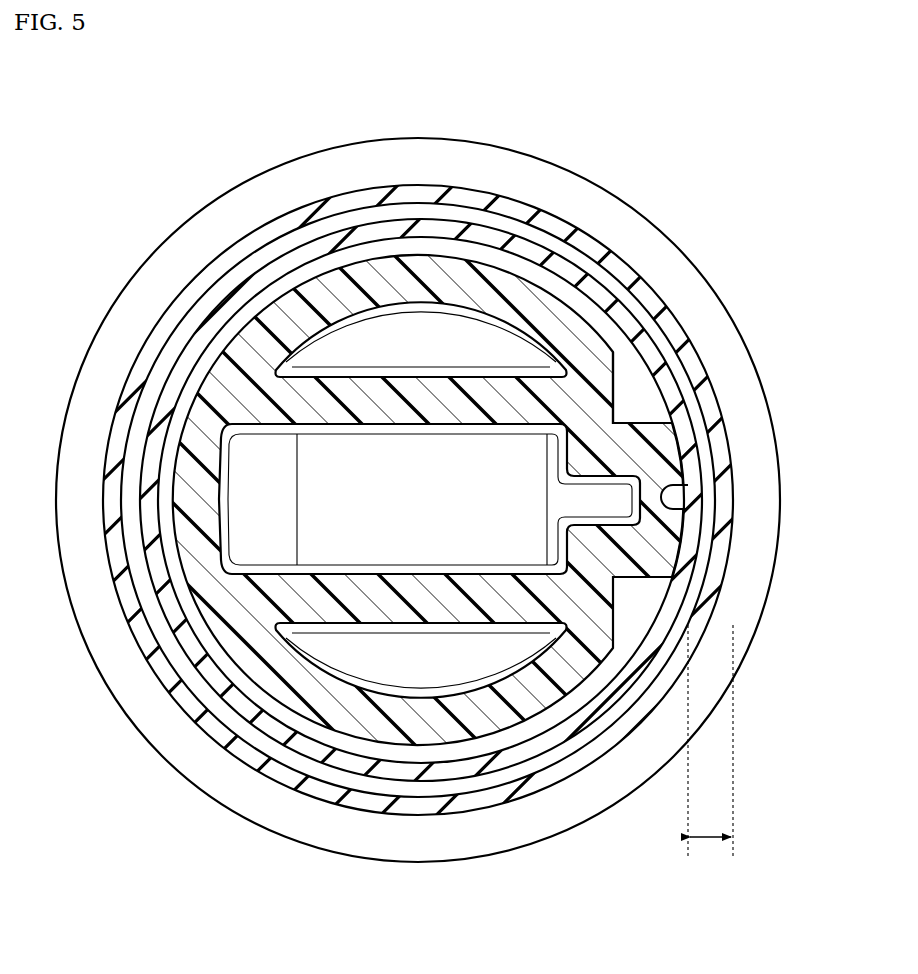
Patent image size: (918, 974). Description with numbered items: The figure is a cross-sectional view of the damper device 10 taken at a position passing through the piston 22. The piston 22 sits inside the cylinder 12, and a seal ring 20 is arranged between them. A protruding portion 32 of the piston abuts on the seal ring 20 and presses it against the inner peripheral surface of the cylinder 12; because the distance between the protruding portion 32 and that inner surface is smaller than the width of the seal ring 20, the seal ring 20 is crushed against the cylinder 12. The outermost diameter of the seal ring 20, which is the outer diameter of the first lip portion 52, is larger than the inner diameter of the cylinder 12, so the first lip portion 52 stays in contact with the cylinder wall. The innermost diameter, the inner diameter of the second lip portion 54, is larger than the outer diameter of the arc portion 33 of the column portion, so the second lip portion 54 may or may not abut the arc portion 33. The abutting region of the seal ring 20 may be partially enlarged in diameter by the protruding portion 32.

The damper device 10 is at (432, 939).
The cylinder 12 is at (585, 175).
The seal ring 20 is at (330, 777).
The piston 22 is at (258, 630).
The protruding portion 32 is at (690, 506).
The arc portion 33 is at (539, 706).
The first lip portion 52 is at (706, 396).
The second lip portion 54 is at (650, 355).